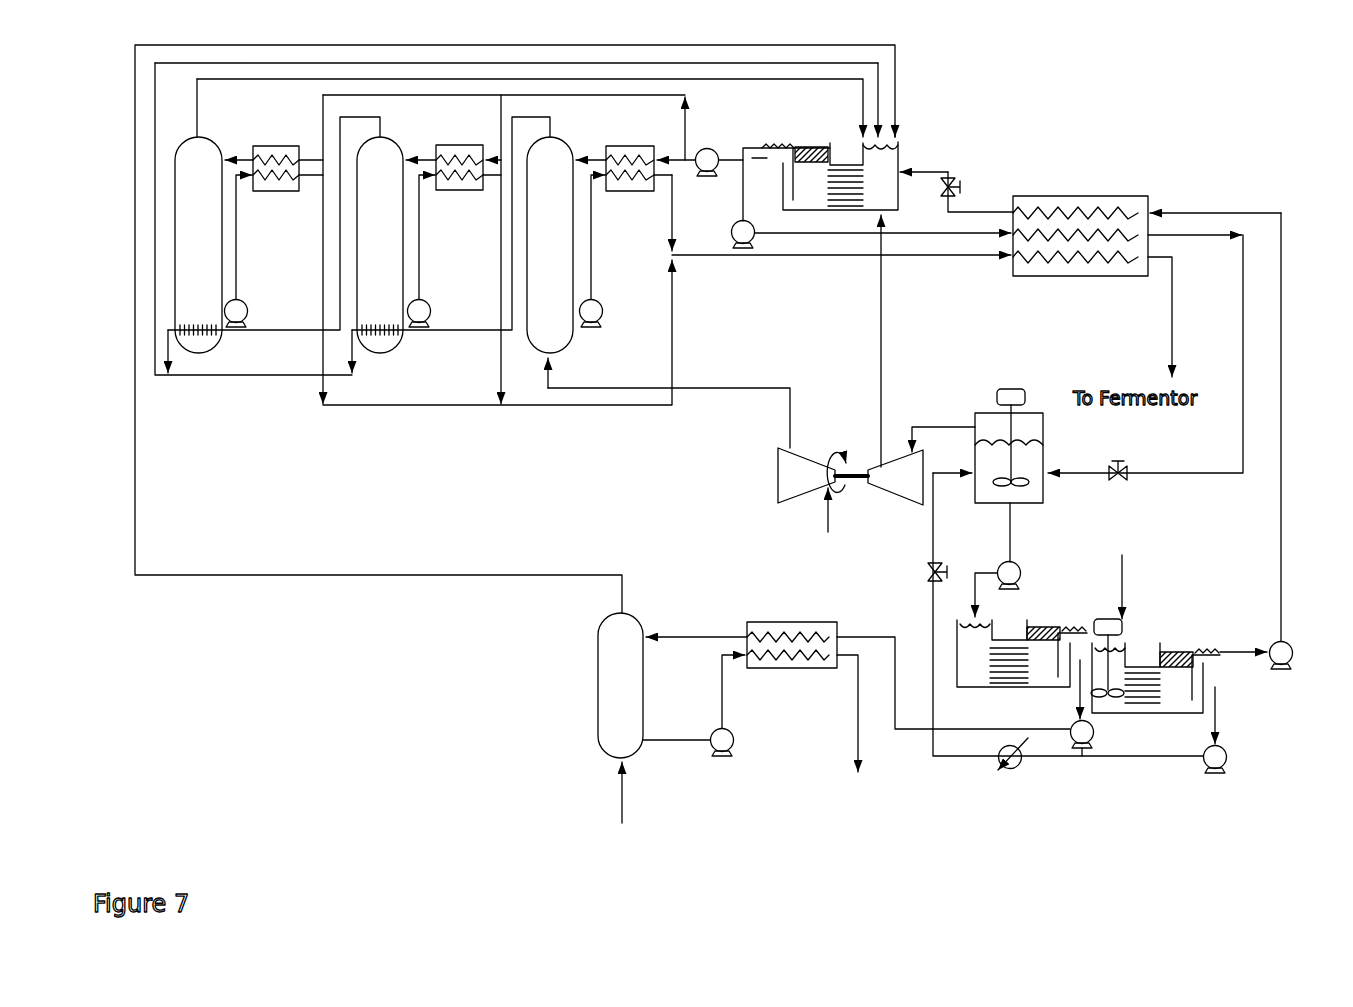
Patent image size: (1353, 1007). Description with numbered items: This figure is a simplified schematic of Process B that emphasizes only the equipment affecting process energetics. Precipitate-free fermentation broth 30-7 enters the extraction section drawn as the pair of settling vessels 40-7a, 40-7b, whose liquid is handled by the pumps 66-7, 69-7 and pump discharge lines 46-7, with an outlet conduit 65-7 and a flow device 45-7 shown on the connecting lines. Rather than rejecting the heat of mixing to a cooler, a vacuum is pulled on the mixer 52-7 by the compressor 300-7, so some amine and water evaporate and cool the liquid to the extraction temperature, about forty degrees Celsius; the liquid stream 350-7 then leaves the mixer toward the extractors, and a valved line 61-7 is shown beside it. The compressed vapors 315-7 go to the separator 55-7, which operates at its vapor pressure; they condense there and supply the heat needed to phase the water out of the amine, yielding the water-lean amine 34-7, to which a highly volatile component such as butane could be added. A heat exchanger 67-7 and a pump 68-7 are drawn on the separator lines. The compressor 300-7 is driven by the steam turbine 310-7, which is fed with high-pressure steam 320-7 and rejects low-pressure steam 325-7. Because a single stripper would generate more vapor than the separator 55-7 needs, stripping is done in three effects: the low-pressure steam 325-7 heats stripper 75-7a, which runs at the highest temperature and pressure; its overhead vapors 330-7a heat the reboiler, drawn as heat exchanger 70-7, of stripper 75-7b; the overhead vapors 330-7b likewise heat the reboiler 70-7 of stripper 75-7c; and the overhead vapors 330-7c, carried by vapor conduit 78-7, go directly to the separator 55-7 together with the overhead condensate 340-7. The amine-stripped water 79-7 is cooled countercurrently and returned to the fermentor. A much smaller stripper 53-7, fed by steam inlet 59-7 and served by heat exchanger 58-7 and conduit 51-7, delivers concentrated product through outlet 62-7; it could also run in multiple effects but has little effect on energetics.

The amine stripper 75-7a is at (550, 245).
The amine stripper 75-7b is at (380, 245).
The amine stripper 75-7c is at (198, 245).
The evaporator heat exchanger 70-7 is at (255, 191).
The amine-stripped water 79-7 is at (236, 276).
The overhead condensate 340-7 is at (211, 375).
The overhead vapors 330-7a is at (550, 137).
The overhead vapors 330-7b is at (380, 137).
The overhead vapors 330-7c is at (198, 137).
The vapor conduit to condenser 78-7 is at (752, 79).
The pump 68-7 is at (725, 158).
The separator 55-7 is at (900, 147).
The water-lean amine 34-7 is at (742, 185).
The heat exchanger 67-7 is at (1057, 196).
The compressed vapors 315-7 is at (880, 350).
The low-pressure steam 325-7 is at (743, 385).
The steam turbine 310-7 is at (777, 487).
The high-pressure steam 320-7 is at (827, 508).
The compressor 300-7 is at (888, 462).
The valved liquid conduit 61-7 is at (933, 533).
The mixer 52-7 is at (1043, 445).
The stream 350-7 is at (1010, 540).
The precipitate-free fermentation broth 30-7 is at (1120, 598).
The settling tank 40-7a is at (968, 688).
The agitated settling tank 40-7b is at (1118, 713).
The outlet conduit 65-7 is at (1253, 640).
The pump 66-7 is at (1270, 668).
The pump 69-7 is at (1217, 697).
The pump discharge conduit 46-7 is at (1082, 756).
The flow control device 45-7 is at (1008, 770).
The stripper 53-7 is at (597, 740).
The steam inlet 59-7 is at (622, 800).
The heat exchanger 58-7 is at (762, 670).
The conduit 51-7 is at (880, 638).
The concentrated product outlet 62-7 is at (855, 702).